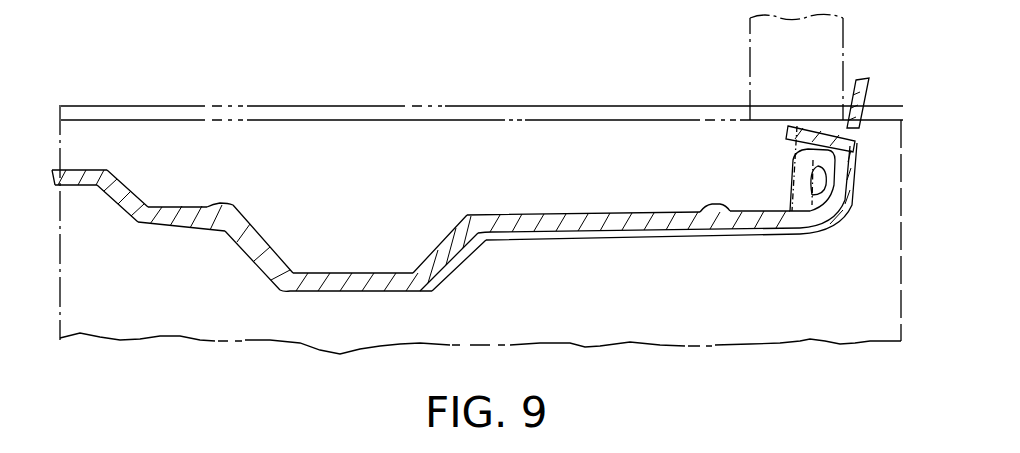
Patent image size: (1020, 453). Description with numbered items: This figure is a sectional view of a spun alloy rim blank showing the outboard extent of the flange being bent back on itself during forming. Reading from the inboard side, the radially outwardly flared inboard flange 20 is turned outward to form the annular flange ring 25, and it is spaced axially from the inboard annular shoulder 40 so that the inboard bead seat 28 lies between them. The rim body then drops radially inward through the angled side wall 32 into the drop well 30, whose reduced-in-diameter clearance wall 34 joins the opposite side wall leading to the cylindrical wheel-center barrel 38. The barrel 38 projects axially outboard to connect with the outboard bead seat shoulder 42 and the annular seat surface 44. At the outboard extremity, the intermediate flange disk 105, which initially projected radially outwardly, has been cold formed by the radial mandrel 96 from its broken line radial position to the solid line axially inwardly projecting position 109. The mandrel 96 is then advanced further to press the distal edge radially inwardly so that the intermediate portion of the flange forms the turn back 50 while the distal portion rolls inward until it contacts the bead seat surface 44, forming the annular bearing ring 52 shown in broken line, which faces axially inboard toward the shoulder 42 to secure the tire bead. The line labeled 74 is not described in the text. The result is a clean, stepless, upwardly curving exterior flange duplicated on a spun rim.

The inboard flange 20 is at (82, 170).
The annular flange ring 25 is at (124, 187).
The inboard bead seat 28 is at (176, 206).
The inboard annular shoulder 40 is at (232, 206).
The angled side wall 32 is at (276, 254).
The drop well 30 is at (348, 272).
The clearance wall 34 is at (433, 250).
The wheel-center barrel 38 is at (572, 213).
The bead seat shoulder 42 is at (707, 203).
The annular seat surface 44 is at (760, 210).
The bearing ring 52 is at (788, 182).
The turn back 50 is at (857, 142).
The body panel 74 is at (312, 122).
The radial mandrel 96 is at (796, 67).
The axially inwardly projecting position of flange element 109 is at (803, 119).
The outboard flange disk 105 is at (873, 82).